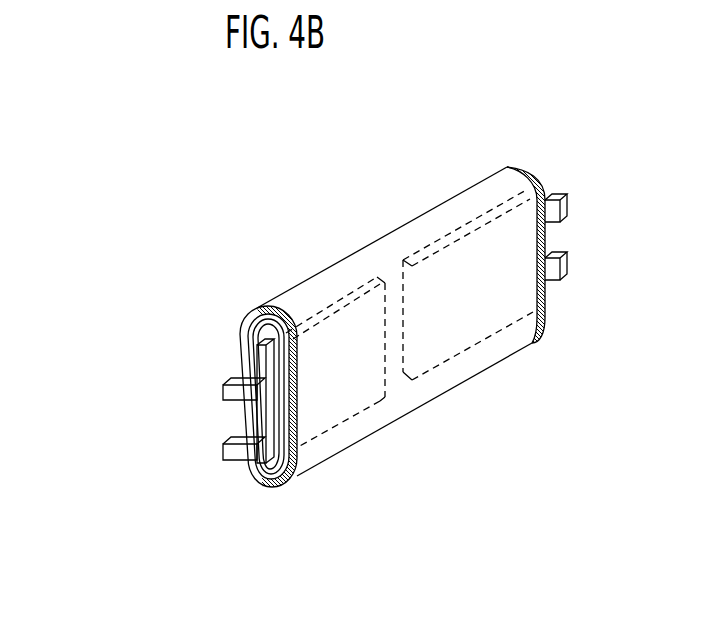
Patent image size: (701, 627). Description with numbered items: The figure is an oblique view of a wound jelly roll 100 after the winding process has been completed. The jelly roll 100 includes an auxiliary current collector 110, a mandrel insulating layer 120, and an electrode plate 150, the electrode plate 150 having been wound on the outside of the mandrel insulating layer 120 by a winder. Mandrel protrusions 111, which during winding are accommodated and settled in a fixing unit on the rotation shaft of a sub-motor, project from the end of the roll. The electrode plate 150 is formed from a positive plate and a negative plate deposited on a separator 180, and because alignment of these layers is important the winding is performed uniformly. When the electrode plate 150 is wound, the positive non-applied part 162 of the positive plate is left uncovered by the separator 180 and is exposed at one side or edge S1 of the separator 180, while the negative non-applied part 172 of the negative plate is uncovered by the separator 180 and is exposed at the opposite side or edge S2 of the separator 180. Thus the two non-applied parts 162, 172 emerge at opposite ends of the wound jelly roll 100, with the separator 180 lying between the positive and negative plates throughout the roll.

The jelly roll 100 is at (115, 212).
The auxiliary current collector 110 is at (250, 462).
The mandrel protrusions 111 is at (226, 382).
The mandrel insulating layer 120 is at (241, 325).
The electrode plate 150 is at (497, 72).
The positive non-applied part 162 is at (258, 310).
The negative non-applied part 172 is at (508, 166).
The separator 180 is at (365, 266).
The one side of the separator S1 is at (254, 320).
The other side of the separator S2 is at (507, 167).